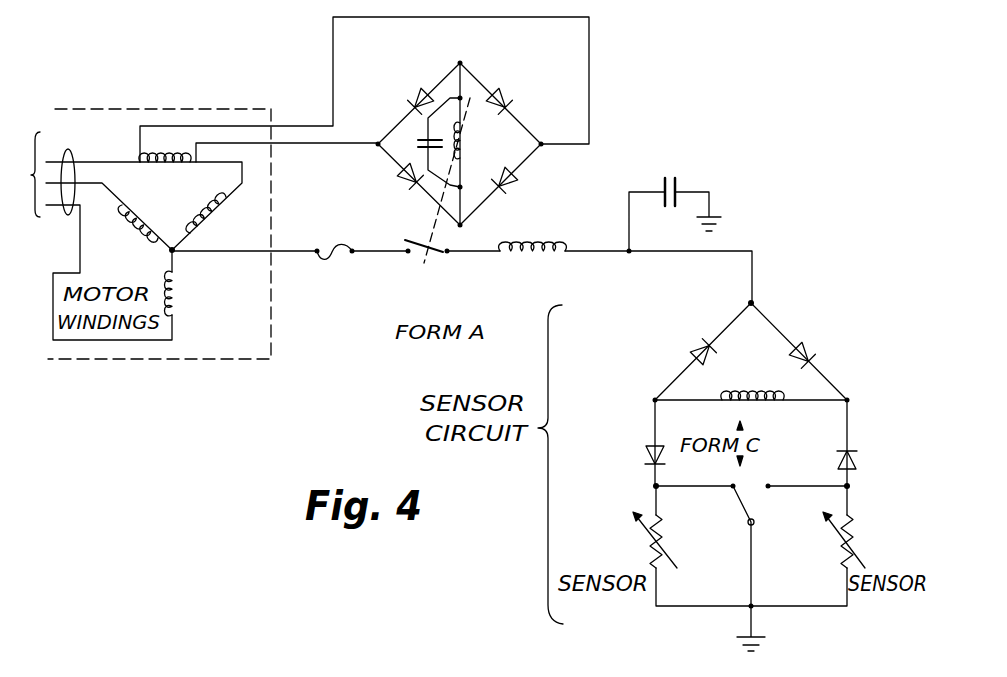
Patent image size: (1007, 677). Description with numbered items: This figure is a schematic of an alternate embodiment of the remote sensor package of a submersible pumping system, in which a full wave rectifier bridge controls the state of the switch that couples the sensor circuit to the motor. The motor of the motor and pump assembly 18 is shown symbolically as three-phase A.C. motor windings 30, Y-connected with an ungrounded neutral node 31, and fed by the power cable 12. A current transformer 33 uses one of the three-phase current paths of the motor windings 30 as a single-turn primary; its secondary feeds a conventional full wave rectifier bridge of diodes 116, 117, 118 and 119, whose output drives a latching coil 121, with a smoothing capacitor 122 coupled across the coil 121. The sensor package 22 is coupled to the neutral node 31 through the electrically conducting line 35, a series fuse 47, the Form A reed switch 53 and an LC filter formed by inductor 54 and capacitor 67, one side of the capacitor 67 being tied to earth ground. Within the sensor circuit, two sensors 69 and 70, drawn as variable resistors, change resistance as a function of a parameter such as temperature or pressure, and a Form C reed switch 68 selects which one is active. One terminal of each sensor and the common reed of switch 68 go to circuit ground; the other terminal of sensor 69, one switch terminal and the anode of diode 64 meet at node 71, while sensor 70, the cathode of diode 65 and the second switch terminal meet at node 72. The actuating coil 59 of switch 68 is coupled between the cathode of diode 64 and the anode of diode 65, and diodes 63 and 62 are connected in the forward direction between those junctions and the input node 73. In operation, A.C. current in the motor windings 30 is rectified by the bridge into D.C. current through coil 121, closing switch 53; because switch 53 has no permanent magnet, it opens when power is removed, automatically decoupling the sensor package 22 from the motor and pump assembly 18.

The power cable 12 is at (69, 150).
The submersible motor and pump assembly 18 is at (271, 360).
The sensor package 22 is at (740, 198).
The motor windings 30 is at (144, 251).
The neutral node 31 is at (170, 252).
The current transformer 33 is at (167, 174).
The electrically conducting line 35 is at (233, 253).
The fuse 47 is at (332, 262).
The Form A reed switch 53 is at (428, 265).
The inductor 54 is at (532, 259).
The actuating coil 59 is at (761, 406).
The diode 62 is at (801, 345).
The diode 63 is at (697, 354).
The diode 64 is at (645, 448).
The diode 65 is at (855, 450).
The capacitor 67 is at (673, 184).
The Form C switch 68 is at (748, 480).
The sensor 69 is at (651, 540).
The sensor 70 is at (852, 542).
The node 71 is at (654, 487).
The node 72 is at (849, 487).
The input node 73 is at (755, 302).
The diode 116 is at (497, 90).
The diode 117 is at (425, 88).
The diode 118 is at (514, 176).
The diode 119 is at (400, 173).
The latching coil 121 is at (463, 160).
The smoothing capacitor 122 is at (419, 139).